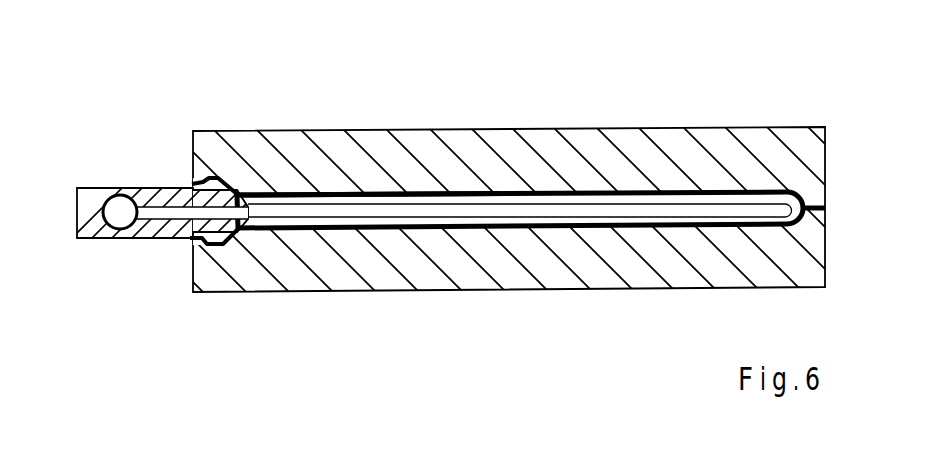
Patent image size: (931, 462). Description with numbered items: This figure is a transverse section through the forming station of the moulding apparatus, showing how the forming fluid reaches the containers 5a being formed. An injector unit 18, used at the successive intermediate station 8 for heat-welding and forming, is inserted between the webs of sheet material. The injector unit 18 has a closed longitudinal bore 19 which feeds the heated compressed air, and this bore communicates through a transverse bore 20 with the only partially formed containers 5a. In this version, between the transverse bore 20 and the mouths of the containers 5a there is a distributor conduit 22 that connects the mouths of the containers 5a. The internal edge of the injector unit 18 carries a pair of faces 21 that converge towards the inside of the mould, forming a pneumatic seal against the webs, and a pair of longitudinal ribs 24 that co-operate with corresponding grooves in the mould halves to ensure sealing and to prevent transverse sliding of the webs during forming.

The container 5a is at (651, 196).
The successive intermediate station 8 is at (618, 326).
The injector unit 18 is at (80, 275).
The closed longitudinal bore 19 is at (97, 203).
The transverse bores 20 is at (171, 213).
The faces 21 is at (220, 180).
The distributor conduit 22 is at (281, 196).
The longitudinal ribs 24 is at (209, 250).